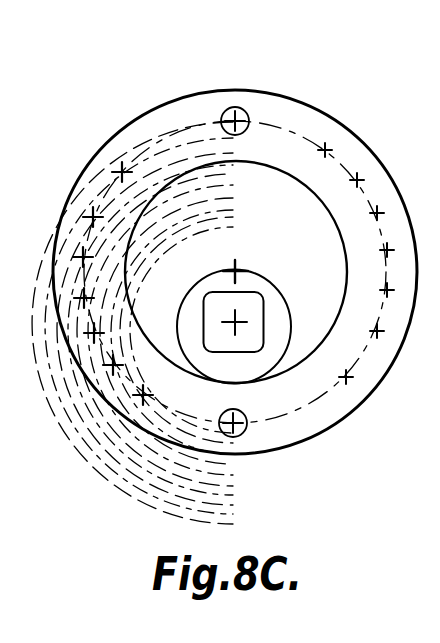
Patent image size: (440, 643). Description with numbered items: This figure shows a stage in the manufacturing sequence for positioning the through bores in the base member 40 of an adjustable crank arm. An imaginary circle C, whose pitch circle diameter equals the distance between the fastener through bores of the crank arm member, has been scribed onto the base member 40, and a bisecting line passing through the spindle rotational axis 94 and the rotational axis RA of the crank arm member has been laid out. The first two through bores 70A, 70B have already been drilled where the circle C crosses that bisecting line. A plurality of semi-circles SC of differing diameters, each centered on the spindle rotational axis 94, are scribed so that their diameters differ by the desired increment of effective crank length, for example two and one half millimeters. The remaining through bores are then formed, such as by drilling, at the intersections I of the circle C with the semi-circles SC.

The base member 40 is at (147, 112).
The first through bore 70A is at (245, 112).
The second through bore 70B is at (245, 430).
The imaginary circle C is at (300, 120).
The rotational axis of the crank arm member RA is at (237, 272).
The intersections I is at (118, 171).
The spindle rotational axis 94 is at (237, 322).
The semi-circles SC is at (95, 428).